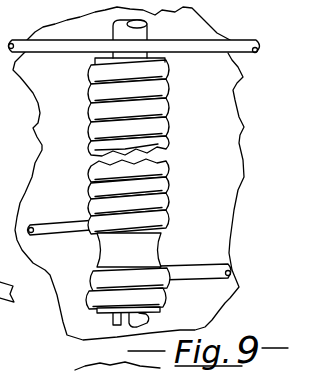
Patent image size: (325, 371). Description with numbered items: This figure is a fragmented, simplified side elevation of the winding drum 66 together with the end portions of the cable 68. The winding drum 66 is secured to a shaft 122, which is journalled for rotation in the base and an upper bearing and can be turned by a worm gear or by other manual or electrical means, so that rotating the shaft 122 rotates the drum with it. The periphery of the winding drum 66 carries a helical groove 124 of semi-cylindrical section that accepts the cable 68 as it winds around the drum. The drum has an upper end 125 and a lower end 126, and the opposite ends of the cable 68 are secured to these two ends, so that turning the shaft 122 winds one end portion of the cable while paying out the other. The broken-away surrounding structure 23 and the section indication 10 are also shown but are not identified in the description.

The housing 23 is at (212, 82).
The shaft 122 is at (148, 30).
The cable 68 is at (252, 41).
The winding drum 66 is at (172, 131).
The upper end 125 is at (92, 64).
The helical groove 124 is at (159, 240).
The lower end 126 is at (122, 302).
The section line 10 is at (70, 318).